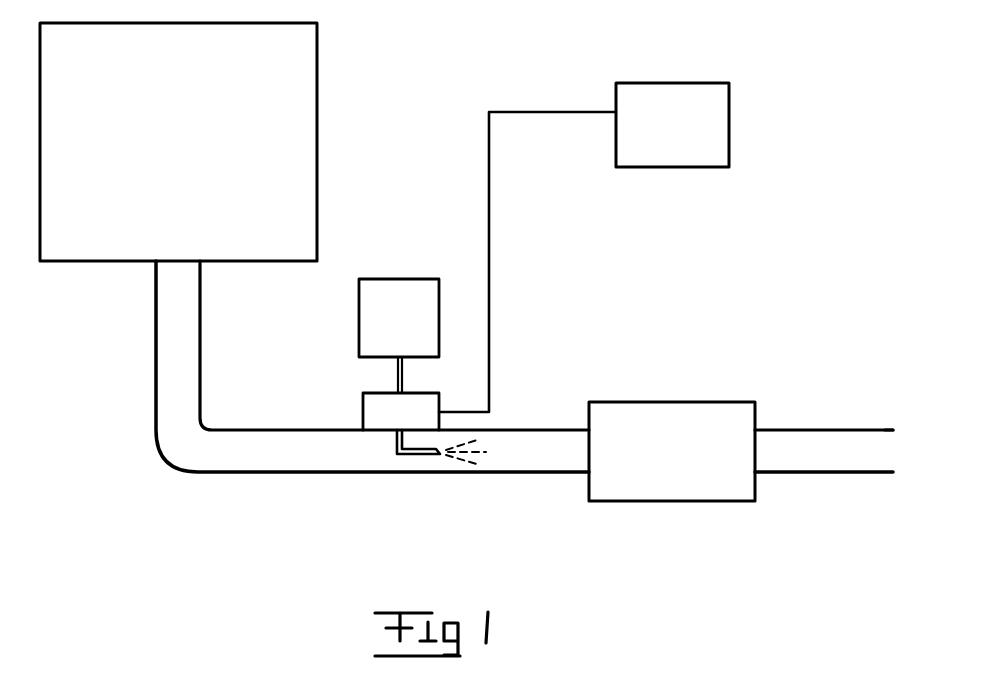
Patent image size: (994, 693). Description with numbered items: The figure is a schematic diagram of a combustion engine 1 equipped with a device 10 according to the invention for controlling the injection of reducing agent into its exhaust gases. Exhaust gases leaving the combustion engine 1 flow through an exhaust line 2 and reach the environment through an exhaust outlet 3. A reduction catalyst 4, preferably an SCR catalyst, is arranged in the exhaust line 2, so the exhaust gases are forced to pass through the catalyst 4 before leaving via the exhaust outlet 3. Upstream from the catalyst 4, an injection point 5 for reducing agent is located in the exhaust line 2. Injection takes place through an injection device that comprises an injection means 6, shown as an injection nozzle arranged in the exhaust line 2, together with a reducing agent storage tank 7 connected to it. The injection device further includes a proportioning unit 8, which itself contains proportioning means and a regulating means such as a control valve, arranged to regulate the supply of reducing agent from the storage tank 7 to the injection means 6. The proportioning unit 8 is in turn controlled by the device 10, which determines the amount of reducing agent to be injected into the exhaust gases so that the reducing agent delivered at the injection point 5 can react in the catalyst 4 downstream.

The combustion engine 1 is at (82, 252).
The exhaust line 2 is at (240, 462).
The exhaust outlet 3 is at (893, 450).
The reduction catalyst 4 is at (642, 486).
The injection point 5 is at (436, 480).
The injection means 6 is at (420, 456).
The reducing agent storage tank 7 is at (395, 292).
The proportioning unit 8 is at (363, 408).
The device 10 is at (657, 95).